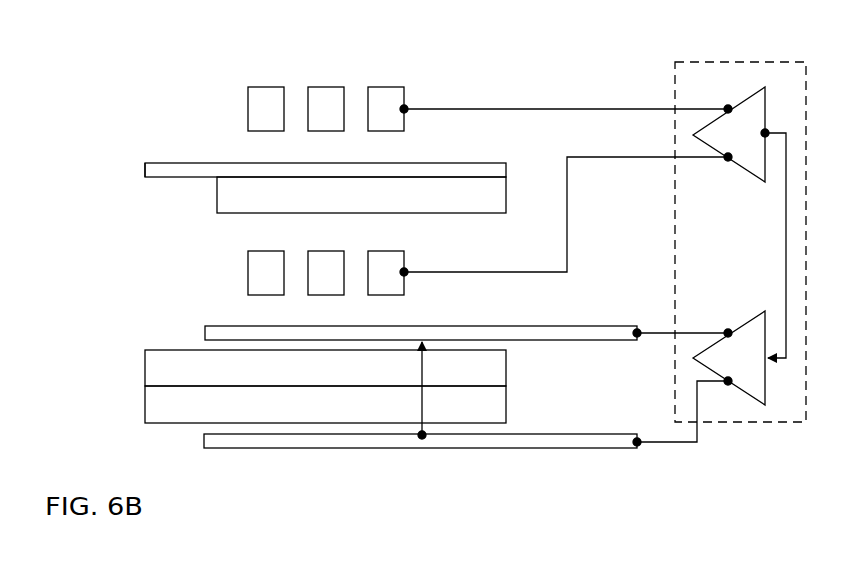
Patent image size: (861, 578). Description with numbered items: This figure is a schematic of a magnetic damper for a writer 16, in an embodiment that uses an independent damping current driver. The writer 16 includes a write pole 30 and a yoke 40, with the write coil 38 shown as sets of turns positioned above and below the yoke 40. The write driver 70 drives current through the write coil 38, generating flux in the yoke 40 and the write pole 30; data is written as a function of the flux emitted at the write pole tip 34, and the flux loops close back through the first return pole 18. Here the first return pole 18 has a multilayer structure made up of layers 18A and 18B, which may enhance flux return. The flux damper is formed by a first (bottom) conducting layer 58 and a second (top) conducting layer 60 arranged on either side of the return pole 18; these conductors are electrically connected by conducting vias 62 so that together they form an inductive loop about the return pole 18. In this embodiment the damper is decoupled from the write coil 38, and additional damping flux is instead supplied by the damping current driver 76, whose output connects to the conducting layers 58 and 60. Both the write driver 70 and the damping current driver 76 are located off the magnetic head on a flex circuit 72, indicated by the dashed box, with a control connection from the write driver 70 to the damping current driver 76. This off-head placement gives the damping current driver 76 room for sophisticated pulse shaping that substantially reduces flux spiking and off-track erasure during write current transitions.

The writer 16 is at (126, 94).
The first return pole 18 is at (139, 346).
The layer of first return pole 18A is at (302, 383).
The layer of first return pole 18B is at (363, 420).
The write pole 30 is at (432, 173).
The write pole tip 34 is at (145, 174).
The write coil 38 is at (257, 115).
The yoke 40 is at (375, 208).
The first (bottom) conducting layer 58 is at (262, 449).
The second (top) conducting layer 60 is at (237, 325).
The conducting vias 62 is at (423, 404).
The write driver 70 is at (750, 147).
The flex circuit 72 is at (667, 56).
The damping current driver 76 is at (750, 370).